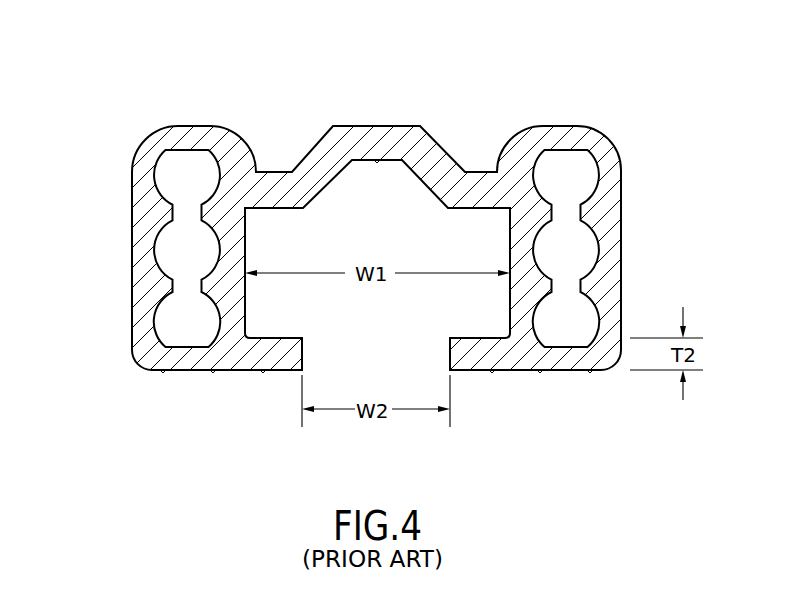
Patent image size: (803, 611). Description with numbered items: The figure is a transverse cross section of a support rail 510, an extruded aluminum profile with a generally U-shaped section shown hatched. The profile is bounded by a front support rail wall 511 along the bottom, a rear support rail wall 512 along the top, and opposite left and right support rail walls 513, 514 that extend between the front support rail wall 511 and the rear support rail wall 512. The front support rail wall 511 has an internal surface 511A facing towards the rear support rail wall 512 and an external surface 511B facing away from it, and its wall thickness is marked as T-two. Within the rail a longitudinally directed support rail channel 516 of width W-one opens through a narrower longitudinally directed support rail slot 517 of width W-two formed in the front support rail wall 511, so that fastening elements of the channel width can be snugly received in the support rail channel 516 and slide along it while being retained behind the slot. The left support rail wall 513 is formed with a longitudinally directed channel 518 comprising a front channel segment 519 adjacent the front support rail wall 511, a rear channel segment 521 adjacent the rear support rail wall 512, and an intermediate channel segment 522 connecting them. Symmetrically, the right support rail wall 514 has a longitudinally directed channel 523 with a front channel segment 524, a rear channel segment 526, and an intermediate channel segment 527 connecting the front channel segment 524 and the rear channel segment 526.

The support rail 510 is at (668, 62).
The front support rail wall 511 is at (192, 373).
The internal surface 511A is at (268, 336).
The external surface 511B is at (285, 373).
The rear support rail wall 512 is at (443, 150).
The left support rail wall 513 is at (132, 282).
The right support rail wall 514 is at (622, 280).
The support rail channel 516 is at (399, 222).
The support rail slot 517 is at (402, 369).
The longitudinal directed channel 518 is at (191, 244).
The front channel segment 519 is at (187, 320).
The rear channel segment 521 is at (187, 177).
The intermediate channel segment 522 is at (190, 255).
The longitudinal directed channel 523 is at (562, 243).
The front channel segment 524 is at (565, 320).
The rear channel segment 526 is at (566, 178).
The intermediate channel segment 527 is at (585, 248).